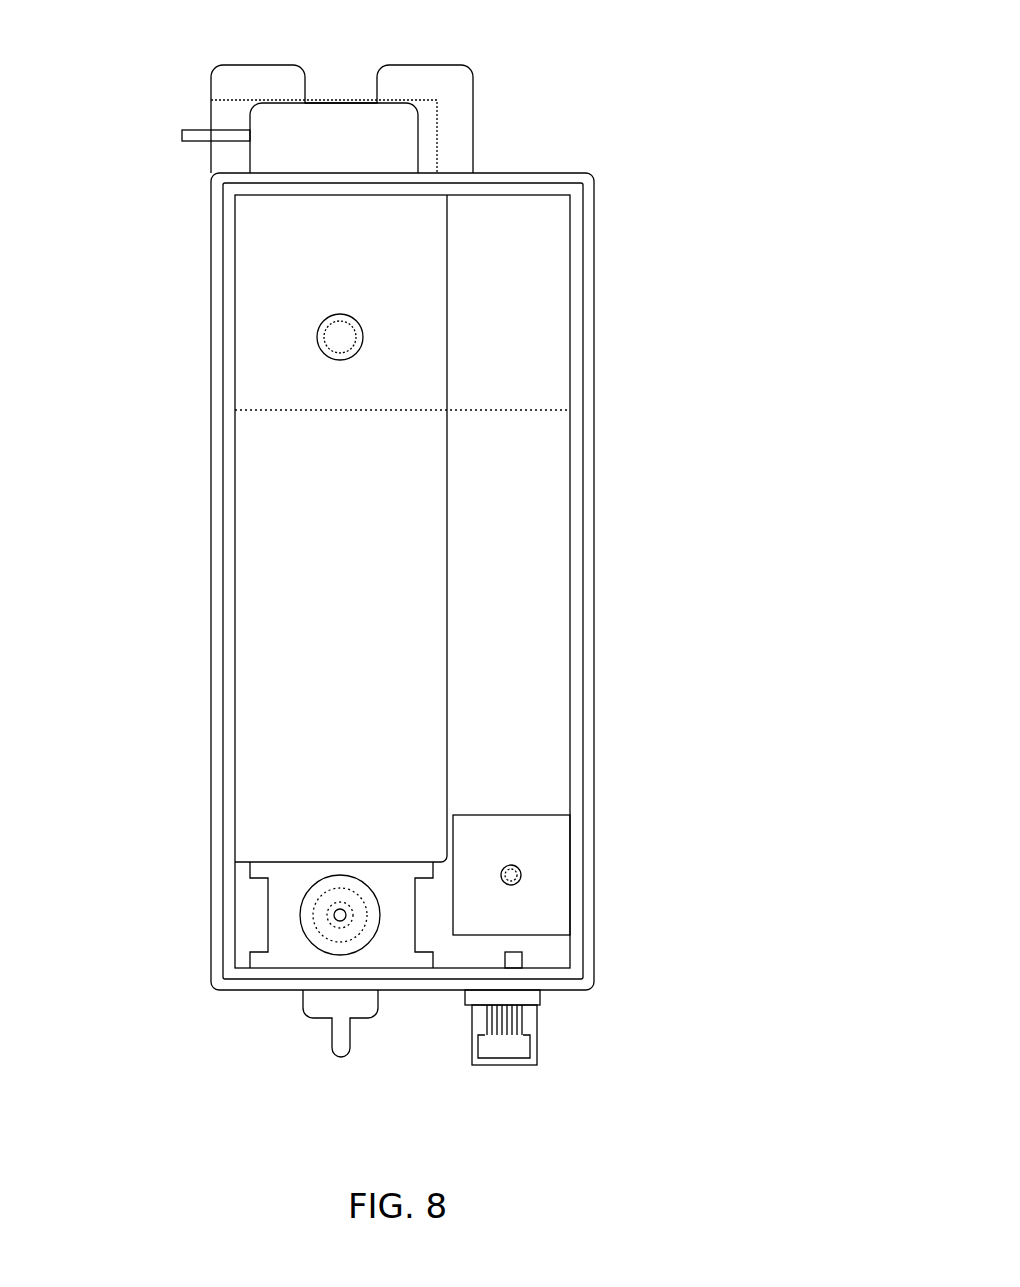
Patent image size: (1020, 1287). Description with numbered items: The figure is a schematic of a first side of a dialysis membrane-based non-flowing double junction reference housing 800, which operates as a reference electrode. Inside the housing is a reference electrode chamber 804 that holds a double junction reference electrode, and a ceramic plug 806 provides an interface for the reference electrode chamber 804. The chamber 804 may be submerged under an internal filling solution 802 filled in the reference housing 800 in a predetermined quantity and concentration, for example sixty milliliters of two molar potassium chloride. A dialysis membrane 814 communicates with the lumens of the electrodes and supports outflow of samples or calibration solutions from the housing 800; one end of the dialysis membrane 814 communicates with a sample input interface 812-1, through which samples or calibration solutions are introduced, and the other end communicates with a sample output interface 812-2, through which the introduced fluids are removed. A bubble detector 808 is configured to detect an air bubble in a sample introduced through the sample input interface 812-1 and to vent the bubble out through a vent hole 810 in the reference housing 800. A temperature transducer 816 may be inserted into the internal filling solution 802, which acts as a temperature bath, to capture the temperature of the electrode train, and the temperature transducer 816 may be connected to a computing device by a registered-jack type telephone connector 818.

The reference housing 800 is at (613, 55).
The internal filling solution 802 is at (558, 494).
The reference electrode chamber 804 is at (540, 828).
The ceramic plug 806 is at (511, 875).
The bubble detector 808 is at (396, 142).
The vent hole 810 is at (345, 337).
The sample input interface 812-1 is at (175, 137).
The sample output interface 812-2 is at (330, 1047).
The dialysis membrane 814 is at (340, 914).
The temperature transducer 816 is at (515, 960).
The RJ-11 connector 818 is at (520, 1049).